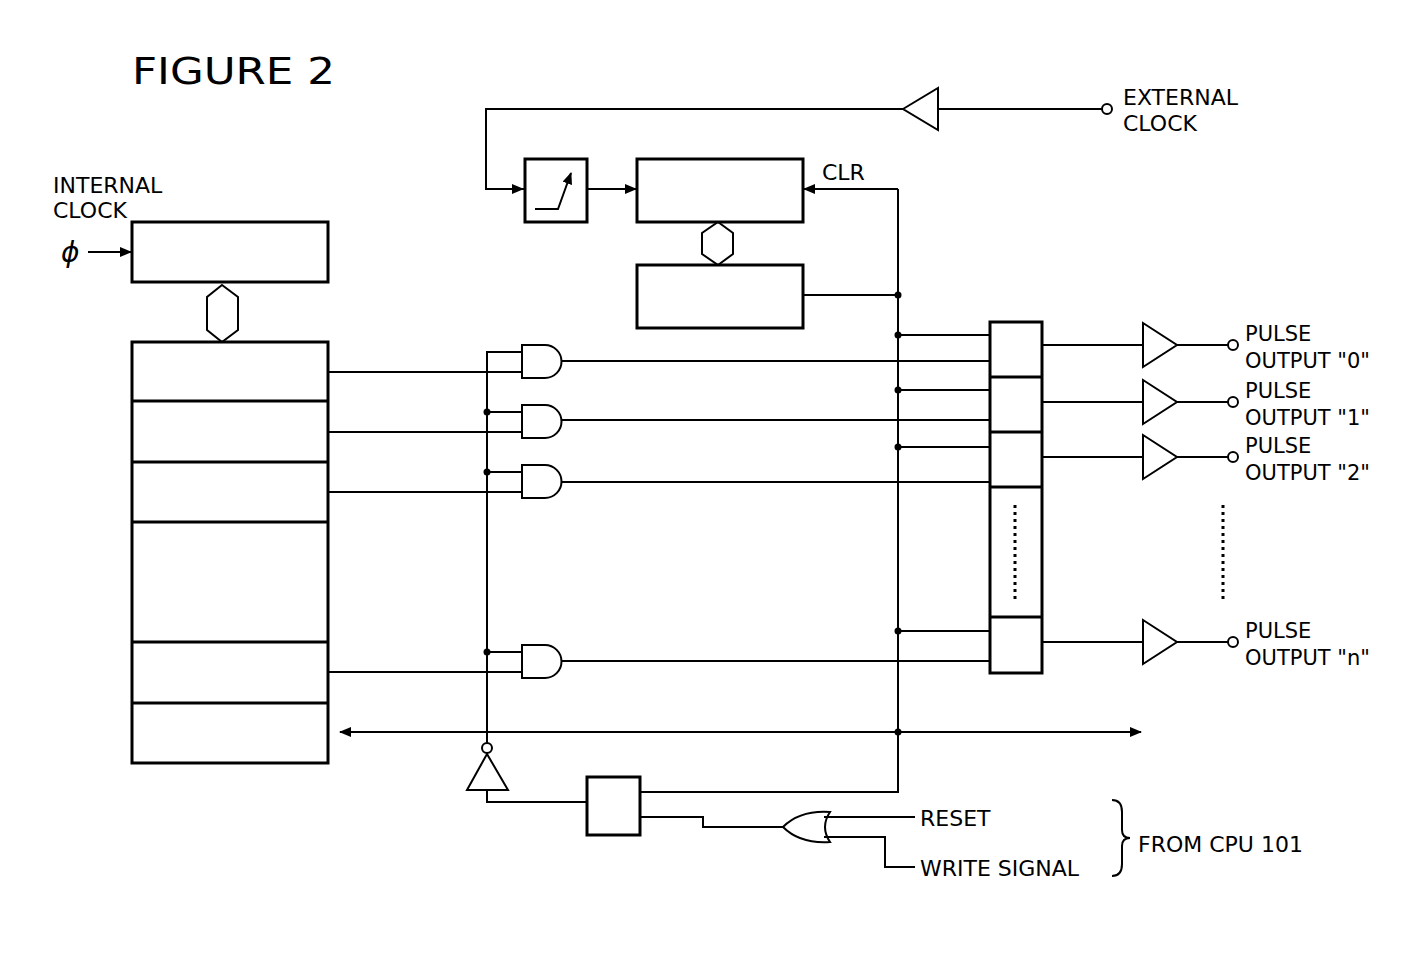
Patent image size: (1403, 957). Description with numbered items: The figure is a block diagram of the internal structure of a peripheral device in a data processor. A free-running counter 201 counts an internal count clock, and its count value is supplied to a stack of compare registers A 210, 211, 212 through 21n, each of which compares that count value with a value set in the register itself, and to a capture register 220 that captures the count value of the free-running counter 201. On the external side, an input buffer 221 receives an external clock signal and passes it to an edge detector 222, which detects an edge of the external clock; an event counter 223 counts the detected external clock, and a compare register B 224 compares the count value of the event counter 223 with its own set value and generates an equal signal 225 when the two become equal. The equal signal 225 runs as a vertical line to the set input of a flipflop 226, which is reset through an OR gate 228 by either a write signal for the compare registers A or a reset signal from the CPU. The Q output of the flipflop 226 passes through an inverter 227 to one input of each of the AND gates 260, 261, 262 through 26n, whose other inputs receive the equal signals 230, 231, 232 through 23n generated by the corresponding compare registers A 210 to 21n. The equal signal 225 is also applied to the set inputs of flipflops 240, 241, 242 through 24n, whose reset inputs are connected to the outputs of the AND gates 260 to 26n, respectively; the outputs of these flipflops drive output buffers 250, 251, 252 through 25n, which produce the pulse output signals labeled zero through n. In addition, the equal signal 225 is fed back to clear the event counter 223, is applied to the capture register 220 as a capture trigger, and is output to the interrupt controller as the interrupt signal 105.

The free-running counter 201 is at (258, 222).
The compare register A 210 is at (132, 380).
The compare register A 211 is at (132, 440).
The compare register A 212 is at (132, 500).
The compare register A 21n is at (132, 680).
The capture register 220 is at (132, 740).
The input buffer 221 is at (943, 128).
The edge detector 222 is at (553, 158).
The event counter 223 is at (752, 159).
The compare register B 224 is at (752, 265).
The equal signal 225 is at (899, 262).
The flipflop 226 is at (608, 777).
The inverter 227 is at (478, 802).
The OR gate 228 is at (800, 844).
The equal signal 230 is at (370, 372).
The equal signal 231 is at (370, 432).
The equal signal 232 is at (370, 492).
The equal signal 23n is at (370, 672).
The flipflop 240 is at (1043, 337).
The flipflop 241 is at (1043, 392).
The flipflop 242 is at (1043, 447).
The flipflop 24n is at (1043, 631).
The output buffer 250 is at (1156, 336).
The output buffer 251 is at (1156, 391).
The output buffer 252 is at (1156, 446).
The output buffer 25n is at (1156, 630).
The AND gate 260 is at (562, 348).
The AND gate 261 is at (562, 408).
The AND gate 262 is at (562, 468).
The AND gate 26n is at (554, 646).
The interrupt signal 105 is at (823, 734).